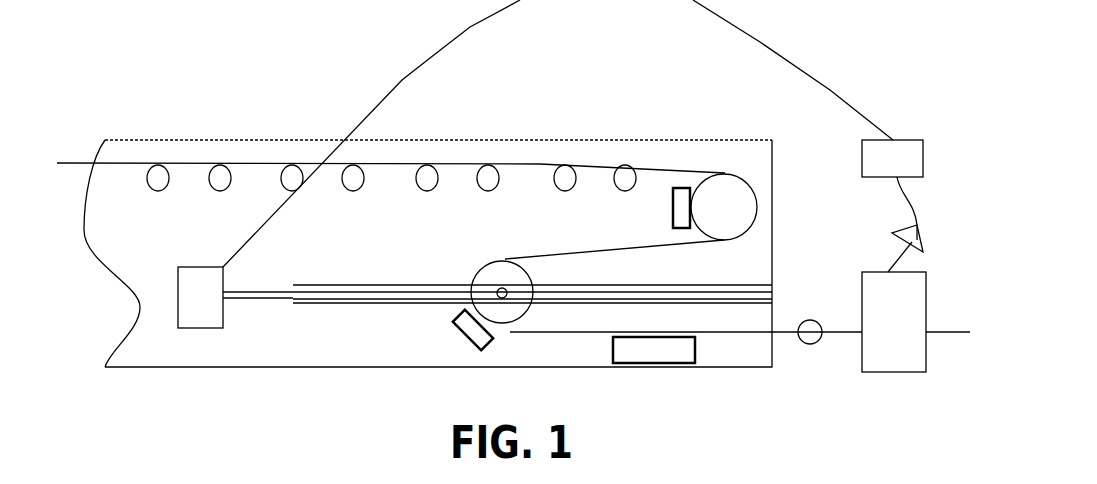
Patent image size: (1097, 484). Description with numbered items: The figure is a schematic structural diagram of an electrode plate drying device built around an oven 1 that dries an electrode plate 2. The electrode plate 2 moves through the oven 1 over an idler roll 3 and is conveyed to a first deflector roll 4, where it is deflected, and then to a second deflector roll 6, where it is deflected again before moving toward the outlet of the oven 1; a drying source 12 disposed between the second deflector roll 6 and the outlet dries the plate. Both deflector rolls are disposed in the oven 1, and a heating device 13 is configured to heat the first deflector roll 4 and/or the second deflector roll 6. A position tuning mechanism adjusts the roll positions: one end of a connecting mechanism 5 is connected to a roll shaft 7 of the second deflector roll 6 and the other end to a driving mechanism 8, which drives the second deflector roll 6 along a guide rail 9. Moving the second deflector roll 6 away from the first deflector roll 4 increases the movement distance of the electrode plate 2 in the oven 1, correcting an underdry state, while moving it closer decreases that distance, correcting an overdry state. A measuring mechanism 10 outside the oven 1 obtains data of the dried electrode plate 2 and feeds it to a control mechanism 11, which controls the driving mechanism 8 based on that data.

The oven 1 is at (438, 109).
The electrode plate 2 is at (391, 178).
The idler roll 3 is at (391, 144).
The first deflector roll 4 is at (741, 172).
The connecting mechanism 5 is at (497, 336).
The second deflector roll 6 is at (501, 329).
The roll shaft 7 is at (472, 258).
The driving mechanism 8 is at (188, 330).
The guide rail 9 is at (467, 253).
The measuring mechanism 10 is at (887, 346).
The control mechanism 11 is at (921, 178).
The drying source 12 is at (646, 389).
The heating device 13 is at (548, 250).